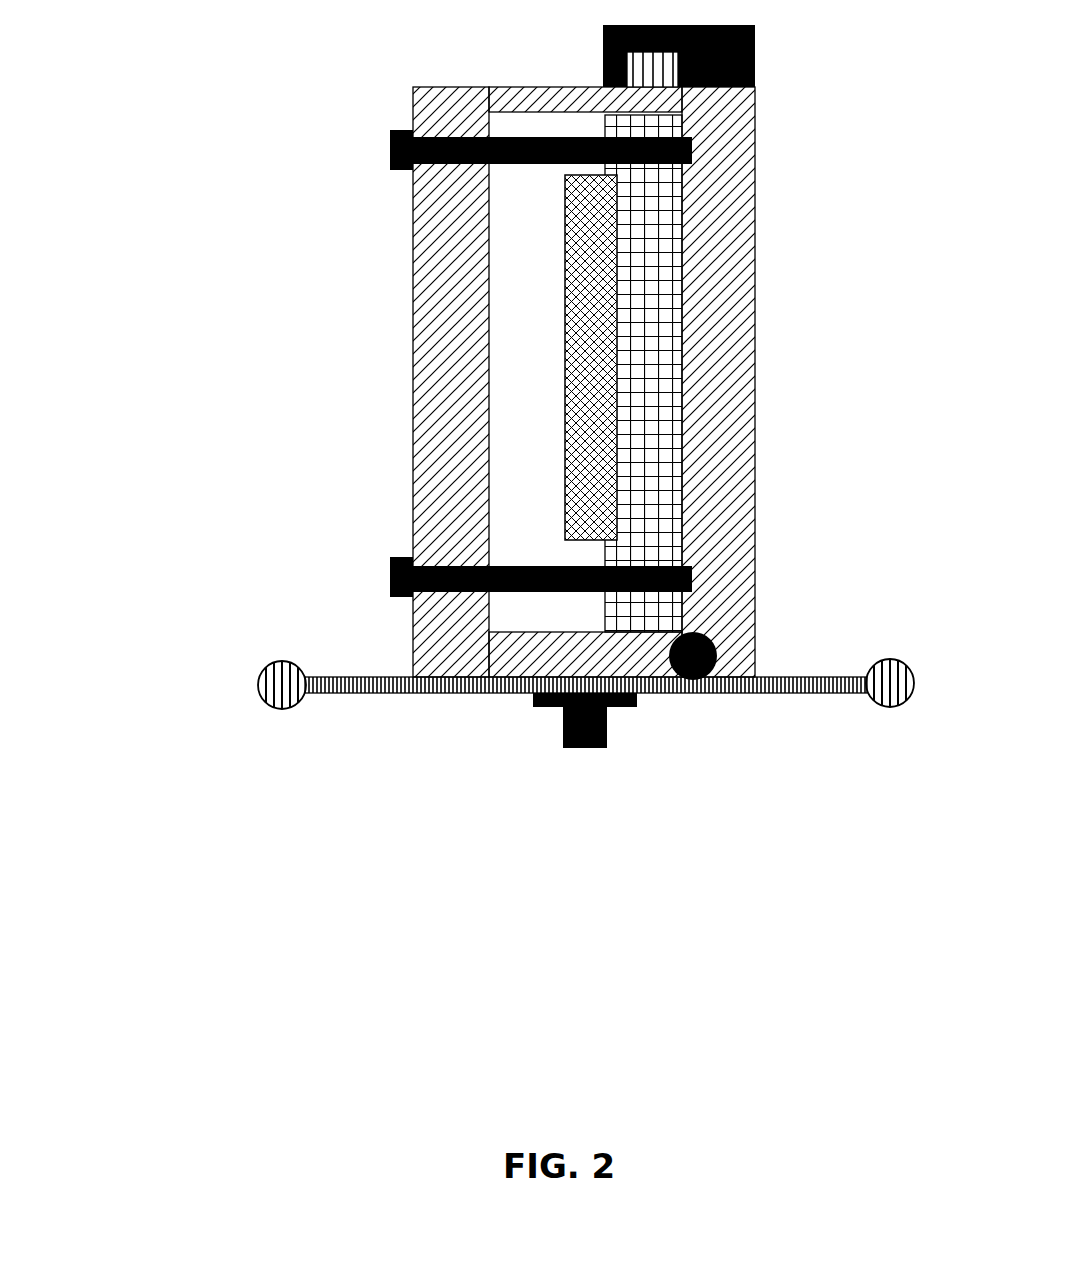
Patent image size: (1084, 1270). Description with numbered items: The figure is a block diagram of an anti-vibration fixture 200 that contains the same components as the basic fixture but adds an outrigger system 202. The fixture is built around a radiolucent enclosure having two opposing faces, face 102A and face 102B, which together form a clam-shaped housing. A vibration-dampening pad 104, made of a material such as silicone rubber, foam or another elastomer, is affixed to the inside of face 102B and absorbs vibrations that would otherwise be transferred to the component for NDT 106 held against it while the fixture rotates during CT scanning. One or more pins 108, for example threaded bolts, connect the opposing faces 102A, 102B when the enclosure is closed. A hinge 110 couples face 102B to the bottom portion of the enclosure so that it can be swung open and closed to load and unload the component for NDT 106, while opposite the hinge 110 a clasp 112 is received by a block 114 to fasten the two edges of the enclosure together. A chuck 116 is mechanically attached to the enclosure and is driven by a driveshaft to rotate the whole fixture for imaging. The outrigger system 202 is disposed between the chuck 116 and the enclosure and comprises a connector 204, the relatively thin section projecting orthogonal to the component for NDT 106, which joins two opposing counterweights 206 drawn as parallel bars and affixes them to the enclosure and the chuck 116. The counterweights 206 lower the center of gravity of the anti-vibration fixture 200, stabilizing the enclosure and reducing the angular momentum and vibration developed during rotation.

The anti-vibration fixture 200 is at (185, 93).
The face 102A is at (433, 112).
The face 102B is at (718, 162).
The vibration-dampening pad 104 is at (660, 202).
The component for NDT 106 is at (593, 287).
The pins 108 is at (390, 575).
The hinge 110 is at (717, 650).
The clasp 112 is at (755, 37).
The block 114 is at (642, 80).
The chuck 116 is at (610, 707).
The outrigger system 202 is at (536, 673).
The connector 204 is at (388, 693).
The counterweights 206 is at (280, 685).